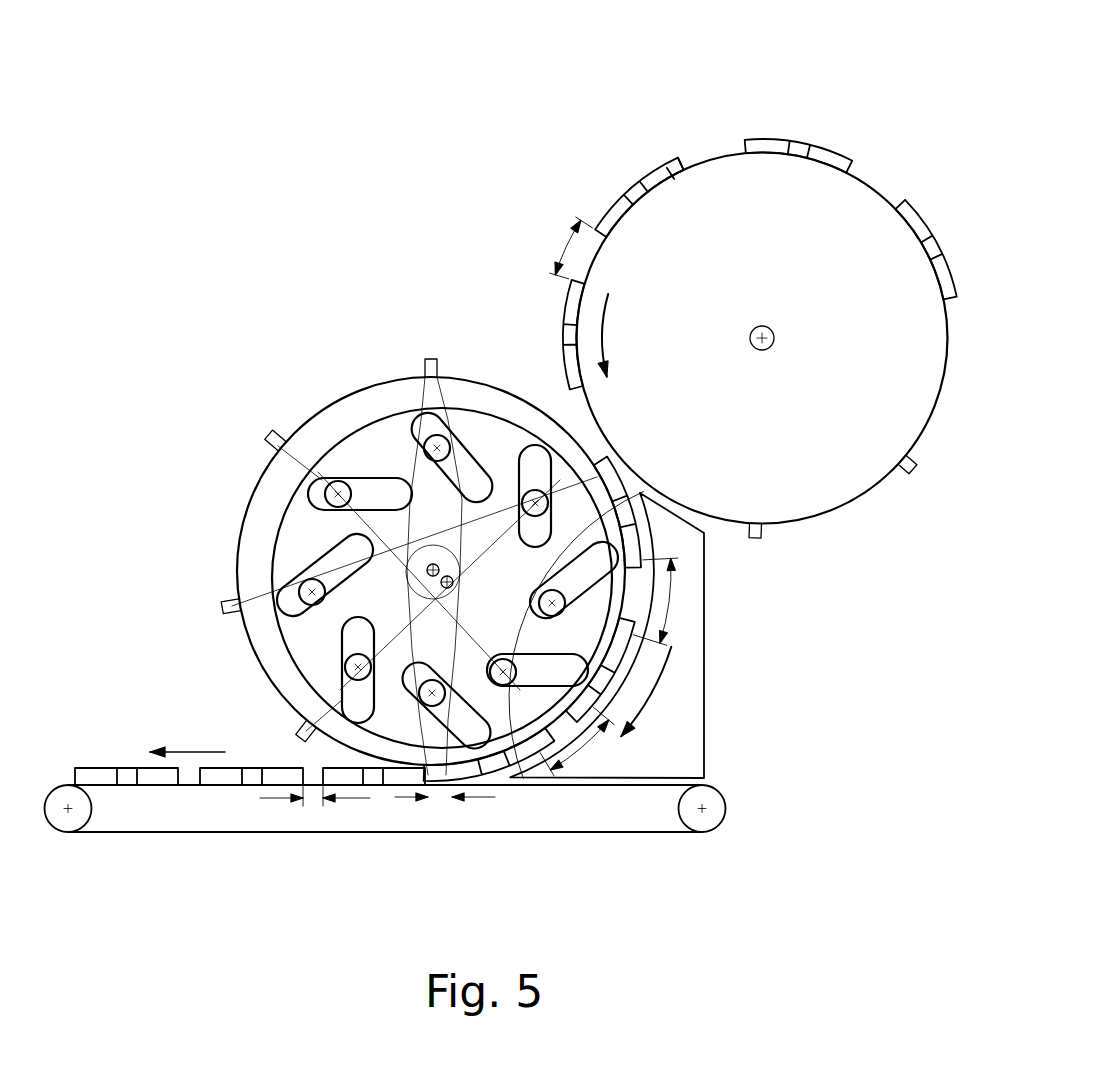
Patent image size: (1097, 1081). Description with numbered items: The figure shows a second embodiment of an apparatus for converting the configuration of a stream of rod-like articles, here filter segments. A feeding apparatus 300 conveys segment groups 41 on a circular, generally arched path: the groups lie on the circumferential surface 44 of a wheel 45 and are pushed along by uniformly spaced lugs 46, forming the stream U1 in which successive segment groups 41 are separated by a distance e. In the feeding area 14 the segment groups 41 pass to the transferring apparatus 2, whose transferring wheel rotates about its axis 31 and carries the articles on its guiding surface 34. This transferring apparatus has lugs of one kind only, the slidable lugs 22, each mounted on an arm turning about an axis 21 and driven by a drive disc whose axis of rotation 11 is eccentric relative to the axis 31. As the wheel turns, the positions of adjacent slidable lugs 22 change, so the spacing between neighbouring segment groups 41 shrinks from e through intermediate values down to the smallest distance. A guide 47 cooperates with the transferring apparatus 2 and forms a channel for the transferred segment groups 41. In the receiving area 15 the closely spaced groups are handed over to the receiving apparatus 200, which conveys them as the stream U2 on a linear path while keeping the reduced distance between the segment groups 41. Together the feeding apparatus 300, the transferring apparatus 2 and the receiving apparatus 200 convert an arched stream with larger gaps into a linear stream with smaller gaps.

The feeding apparatus 300 is at (685, 289).
The stream of rod-like articles U1 is at (689, 291).
The circumferential surface 44 is at (712, 157).
The wheel 45 is at (780, 475).
The lugs 46 is at (685, 155).
The segment groups 41 is at (803, 130).
The transferring apparatus 2 is at (420, 497).
The guiding surface 34 is at (365, 378).
The axis of rotation 11 is at (437, 582).
The slidable lugs 22 is at (437, 358).
The axis 21 is at (433, 570).
The axis of transferring wheel 31 is at (447, 582).
The feeding area 14 is at (555, 392).
The guide 47 is at (675, 692).
The stream of rod-like articles U2 is at (385, 776).
The receiving apparatus 200 is at (385, 857).
The receiving area 15 is at (498, 792).